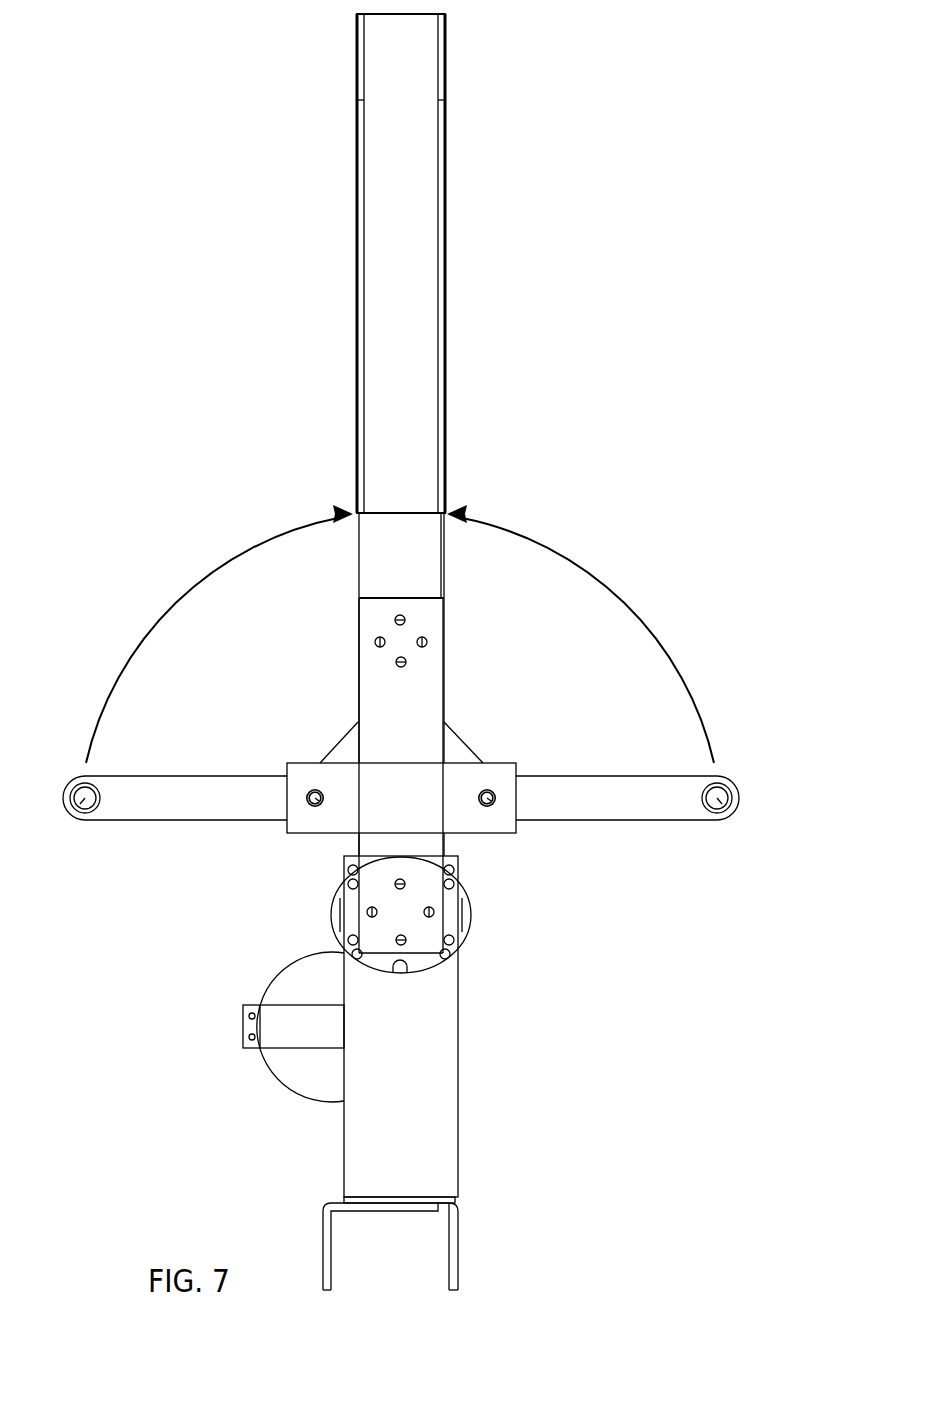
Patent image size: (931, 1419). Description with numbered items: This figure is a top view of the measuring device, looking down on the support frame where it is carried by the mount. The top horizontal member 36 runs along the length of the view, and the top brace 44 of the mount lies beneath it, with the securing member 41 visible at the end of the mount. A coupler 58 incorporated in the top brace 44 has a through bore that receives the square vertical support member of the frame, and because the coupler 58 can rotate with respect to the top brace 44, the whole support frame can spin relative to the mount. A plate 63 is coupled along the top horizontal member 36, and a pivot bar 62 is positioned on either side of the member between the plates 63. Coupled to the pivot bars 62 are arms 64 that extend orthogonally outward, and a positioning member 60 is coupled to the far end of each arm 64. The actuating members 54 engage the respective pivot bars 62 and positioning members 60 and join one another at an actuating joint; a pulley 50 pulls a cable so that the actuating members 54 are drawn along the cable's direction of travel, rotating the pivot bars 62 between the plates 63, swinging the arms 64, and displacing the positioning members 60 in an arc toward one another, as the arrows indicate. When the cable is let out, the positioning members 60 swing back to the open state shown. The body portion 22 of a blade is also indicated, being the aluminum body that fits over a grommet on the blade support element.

The body portion 22 is at (415, 120).
The top horizontal member 36 is at (415, 690).
The securing member 41 is at (455, 1250).
The top brace 44 is at (435, 1060).
The pulley 50 is at (295, 987).
The actuating members 54 is at (338, 750).
The coupler 58 is at (468, 913).
The positioning member 60 is at (83, 806).
The pivot bar 62 is at (315, 800).
The plate 63 is at (432, 807).
The arm 64 is at (232, 786).